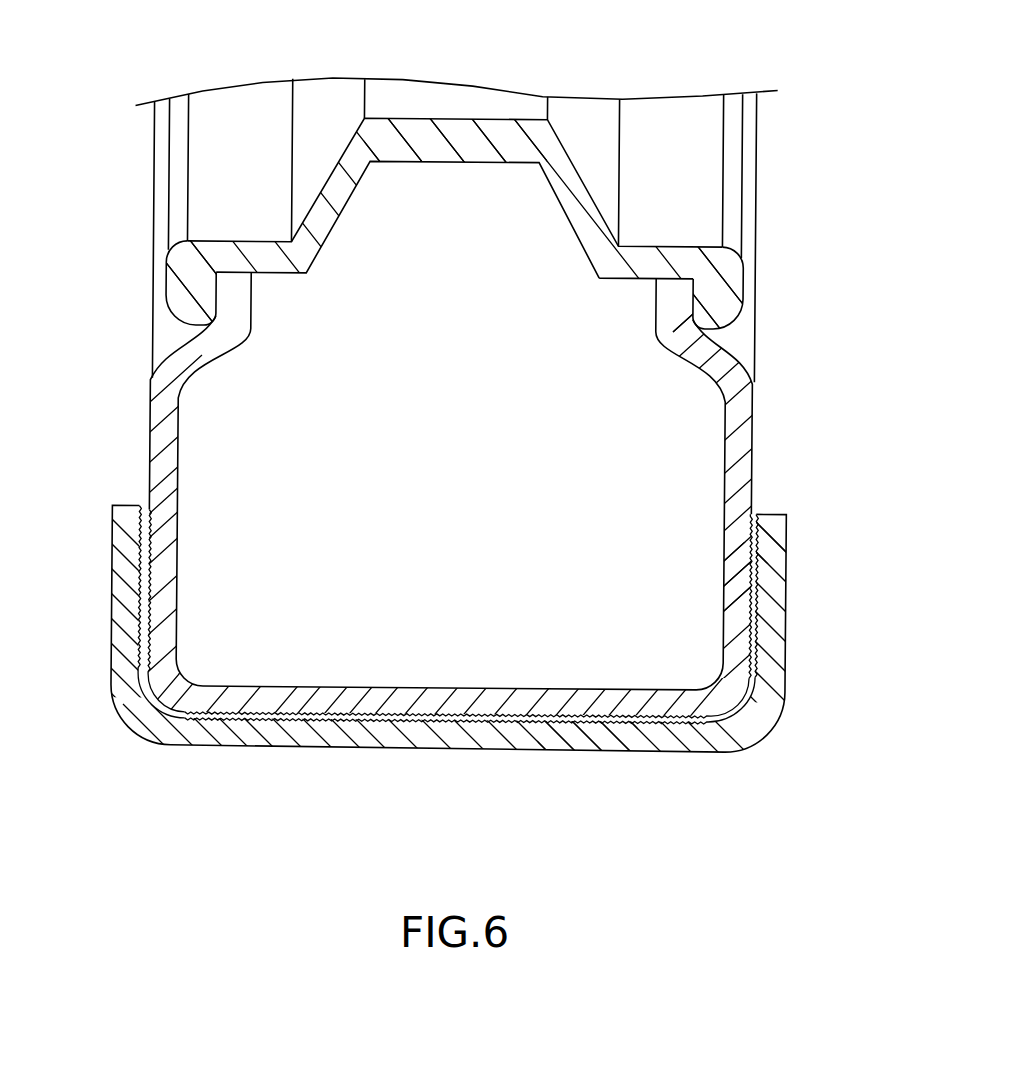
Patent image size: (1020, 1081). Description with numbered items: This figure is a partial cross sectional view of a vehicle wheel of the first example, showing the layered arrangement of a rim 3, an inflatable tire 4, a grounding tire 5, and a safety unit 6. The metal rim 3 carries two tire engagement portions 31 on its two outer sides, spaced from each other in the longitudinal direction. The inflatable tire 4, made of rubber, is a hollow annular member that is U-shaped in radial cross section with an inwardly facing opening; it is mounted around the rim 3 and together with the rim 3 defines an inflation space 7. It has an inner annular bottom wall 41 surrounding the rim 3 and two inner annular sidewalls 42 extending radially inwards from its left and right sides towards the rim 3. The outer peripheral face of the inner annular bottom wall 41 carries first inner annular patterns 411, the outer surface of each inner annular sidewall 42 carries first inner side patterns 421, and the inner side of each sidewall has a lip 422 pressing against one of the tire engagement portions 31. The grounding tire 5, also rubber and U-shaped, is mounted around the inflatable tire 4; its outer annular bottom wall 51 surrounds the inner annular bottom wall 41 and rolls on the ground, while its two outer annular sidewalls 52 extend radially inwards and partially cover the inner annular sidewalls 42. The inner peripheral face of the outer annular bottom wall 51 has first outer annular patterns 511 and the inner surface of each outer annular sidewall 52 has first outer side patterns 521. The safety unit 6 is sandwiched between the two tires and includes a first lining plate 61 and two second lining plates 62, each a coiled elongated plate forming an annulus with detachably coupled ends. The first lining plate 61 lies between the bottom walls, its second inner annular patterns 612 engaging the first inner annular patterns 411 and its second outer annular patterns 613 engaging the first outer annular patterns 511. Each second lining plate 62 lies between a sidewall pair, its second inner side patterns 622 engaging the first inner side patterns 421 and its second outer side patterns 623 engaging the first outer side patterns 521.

The rim 3 is at (509, 222).
The inflation space 7 is at (419, 208).
The tire engagement portion 31 is at (187, 279).
The inflatable tire 4 is at (463, 457).
The inner annular bottom wall 41 is at (273, 713).
The first inner annular patterns 411 is at (221, 712).
The inner annular sidewall 42 is at (153, 413).
The first inner side patterns 421 is at (818, 578).
The lip 422 is at (233, 290).
The grounding tire 5 is at (456, 661).
The outer annular bottom wall 51 is at (707, 747).
The first outer annular patterns 511 is at (613, 725).
The outer annular sidewall 52 is at (122, 623).
The first outer side patterns 521 is at (789, 546).
The safety unit 6 is at (447, 660).
The first lining plate 61 is at (445, 722).
The second inner annular patterns 612 is at (304, 735).
The second outer annular patterns 613 is at (530, 725).
The second lining plate 62 is at (139, 568).
The second inner side patterns 622 is at (138, 667).
The second outer side patterns 623 is at (140, 558).